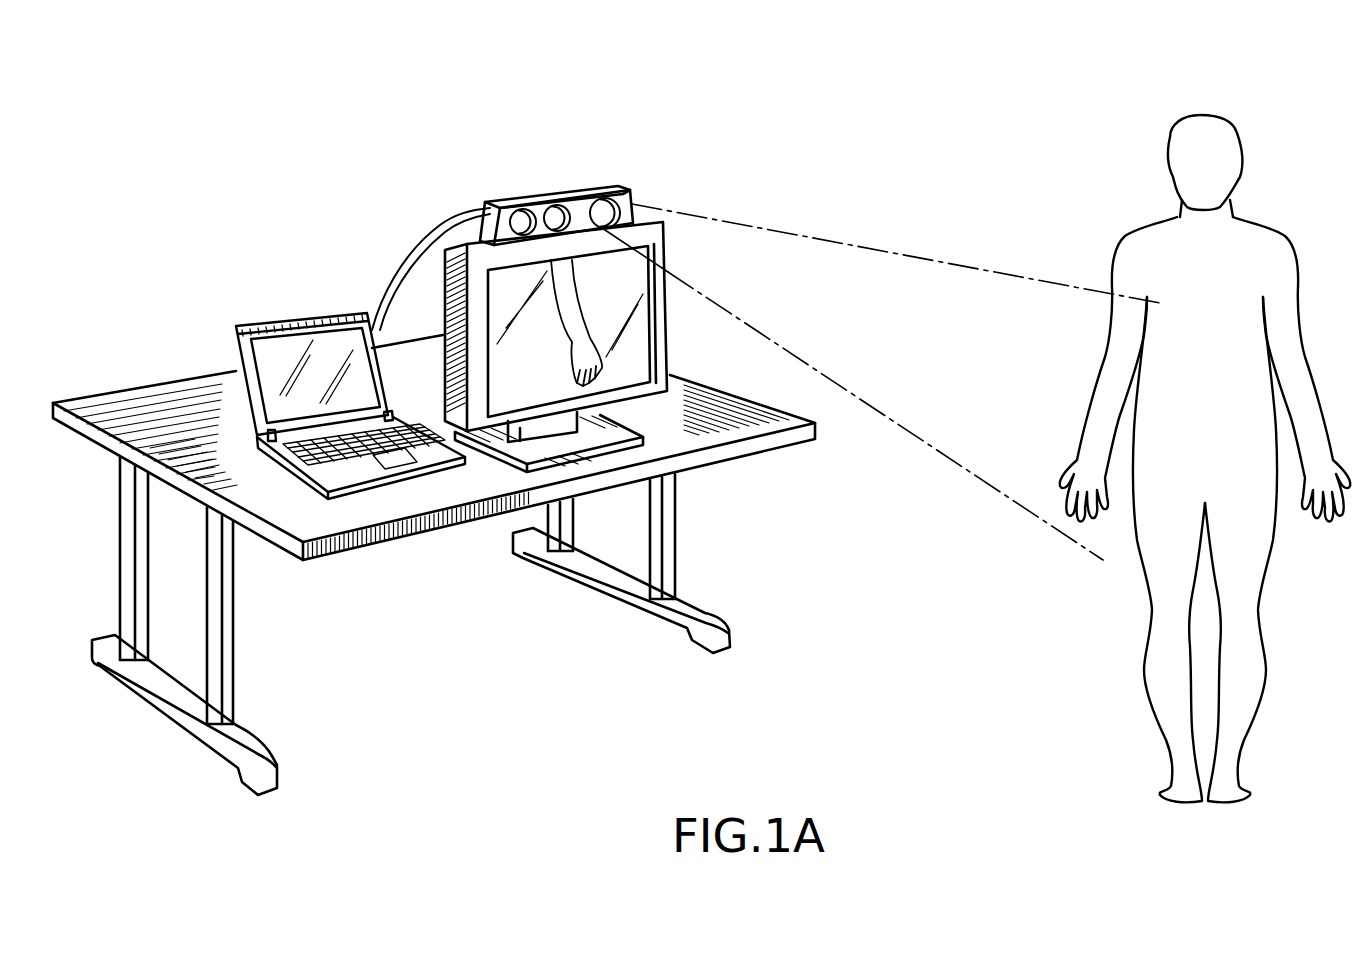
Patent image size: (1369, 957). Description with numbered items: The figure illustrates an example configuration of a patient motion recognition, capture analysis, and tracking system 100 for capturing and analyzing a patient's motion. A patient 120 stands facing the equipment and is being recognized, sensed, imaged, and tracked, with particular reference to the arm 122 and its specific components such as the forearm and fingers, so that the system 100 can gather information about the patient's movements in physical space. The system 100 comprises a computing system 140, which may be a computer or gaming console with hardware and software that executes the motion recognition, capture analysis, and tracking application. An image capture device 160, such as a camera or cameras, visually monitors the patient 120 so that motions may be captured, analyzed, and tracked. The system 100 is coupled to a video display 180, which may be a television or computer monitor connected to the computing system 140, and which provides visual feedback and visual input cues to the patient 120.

The patient motion recognition, capture analysis, and tracking system 100 is at (405, 148).
The patient 120 is at (1248, 230).
The arm 122 is at (1108, 398).
The computing system 140 is at (303, 322).
The image capture device 160 is at (576, 203).
The video display 180 is at (637, 349).